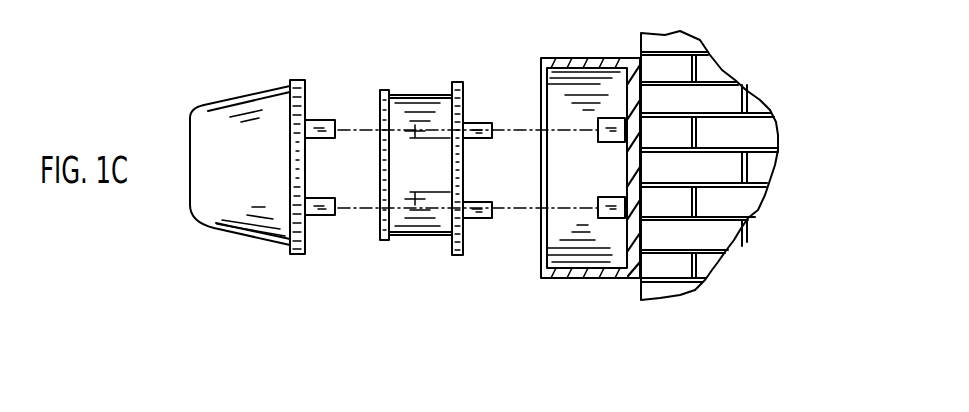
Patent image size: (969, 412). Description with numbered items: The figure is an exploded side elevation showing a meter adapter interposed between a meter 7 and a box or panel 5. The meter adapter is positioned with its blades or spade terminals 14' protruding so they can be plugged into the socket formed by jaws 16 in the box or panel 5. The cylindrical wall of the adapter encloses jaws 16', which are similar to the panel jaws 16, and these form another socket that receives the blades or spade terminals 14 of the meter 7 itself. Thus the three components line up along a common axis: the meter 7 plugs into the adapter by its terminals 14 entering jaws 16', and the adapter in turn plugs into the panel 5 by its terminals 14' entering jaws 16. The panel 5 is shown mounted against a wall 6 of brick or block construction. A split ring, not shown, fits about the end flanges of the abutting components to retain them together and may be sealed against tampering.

The box or panel 5 is at (572, 2).
The wall 6 is at (742, 142).
The meter 7 is at (207, 112).
The blades or spade terminals 14 is at (329, 167).
The blades or spade terminals 14' is at (489, 170).
The jaws 16 is at (586, 172).
The jaws 16' is at (421, 158).